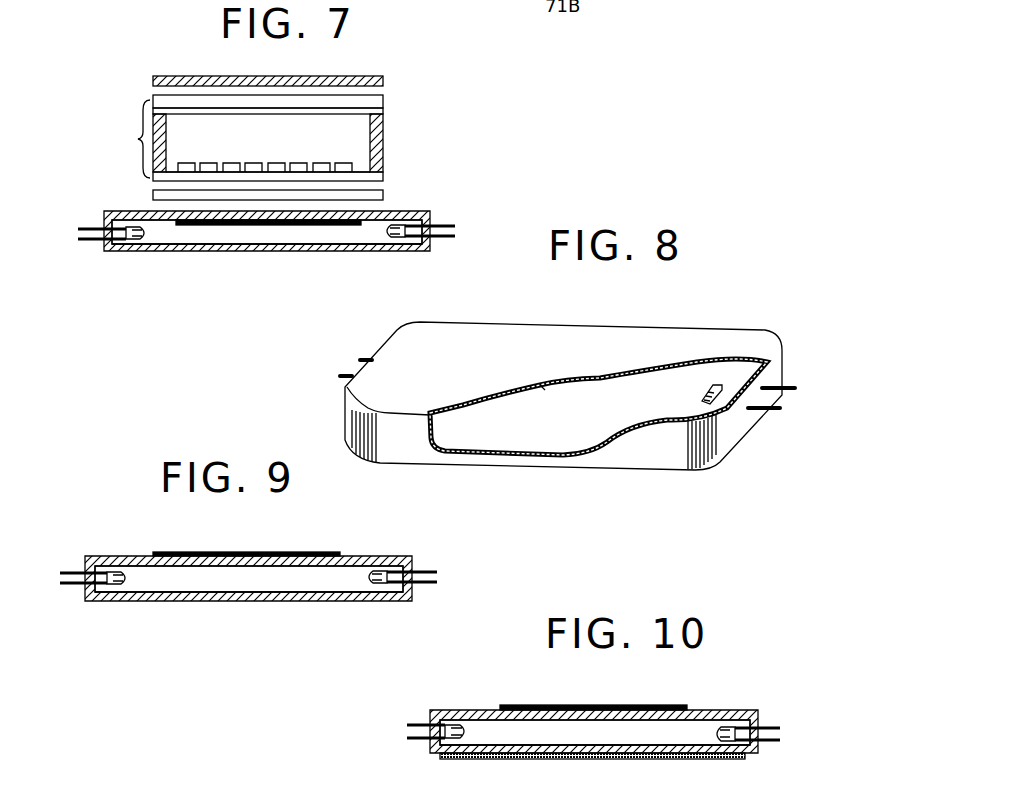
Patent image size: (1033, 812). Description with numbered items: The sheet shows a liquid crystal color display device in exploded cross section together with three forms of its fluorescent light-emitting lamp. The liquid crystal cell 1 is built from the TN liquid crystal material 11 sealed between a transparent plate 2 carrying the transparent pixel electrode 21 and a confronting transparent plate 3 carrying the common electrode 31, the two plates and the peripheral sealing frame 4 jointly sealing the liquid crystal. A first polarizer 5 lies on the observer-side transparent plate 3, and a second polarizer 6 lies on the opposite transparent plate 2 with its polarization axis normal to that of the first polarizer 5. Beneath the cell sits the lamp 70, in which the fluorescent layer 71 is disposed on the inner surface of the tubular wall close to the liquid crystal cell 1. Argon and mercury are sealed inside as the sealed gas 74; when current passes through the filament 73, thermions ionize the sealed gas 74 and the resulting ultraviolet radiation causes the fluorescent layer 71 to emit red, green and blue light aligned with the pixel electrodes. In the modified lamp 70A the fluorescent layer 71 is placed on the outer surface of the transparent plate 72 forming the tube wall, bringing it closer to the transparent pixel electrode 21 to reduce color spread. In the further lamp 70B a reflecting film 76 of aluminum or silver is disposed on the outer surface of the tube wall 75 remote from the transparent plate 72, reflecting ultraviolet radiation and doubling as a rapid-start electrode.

In FIG. 7, the liquid crystal cell 1 is at (137, 139).
In FIG. 7, the transparent plate 2 is at (385, 176).
In FIG. 7, the transparent plate 3 is at (385, 98).
In FIG. 7, the common electrode 31 is at (360, 114).
In FIG. 7, the peripheral sealing frame 4 is at (385, 134).
In FIG. 7, the first polarizer 5 is at (153, 80).
In FIG. 7, the second polarizer 6 is at (153, 195).
In FIG. 7, the TN liquid crystal material 11 is at (279, 146).
In FIG. 7, the transparent pixel electrode 21 is at (357, 158).
In FIG. 7, the lamp 70 is at (265, 234).
In FIG. 8, the lamp 70 is at (567, 393).
In FIG. 9, the lamp 70A is at (270, 579).
In FIG. 10, the lamp 70B is at (616, 726).
In FIG. 7, the fluorescent layer 71 is at (277, 225).
In FIG. 8, the fluorescent layer 71 is at (578, 382).
In FIG. 9, the fluorescent layer 71 is at (265, 552).
In FIG. 10, the fluorescent layer 71 is at (612, 705).
In FIG. 7, the transparent plate 72 is at (418, 212).
In FIG. 8, the transparent plate 72 is at (510, 330).
In FIG. 9, the transparent plate 72 is at (358, 530).
In FIG. 10, the transparent plate 72 is at (703, 710).
In FIG. 7, the filament 73 is at (393, 240).
In FIG. 8, the filament 73 is at (705, 398).
In FIG. 9, the filament 73 is at (378, 590).
In FIG. 10, the filament 73 is at (718, 745).
In FIG. 7, the sealed gas 74 is at (232, 237).
In FIG. 8, the sealed gas 74 is at (556, 419).
In FIG. 9, the sealed gas 74 is at (253, 594).
In FIG. 10, the sealed gas 74 is at (600, 746).
In FIG. 7, the tube wall 75 is at (333, 246).
In FIG. 8, the tube wall 75 is at (582, 454).
In FIG. 9, the tube wall 75 is at (328, 600).
In FIG. 10, the tube wall 75 is at (625, 752).
In FIG. 10, the reflecting film 76 is at (580, 759).